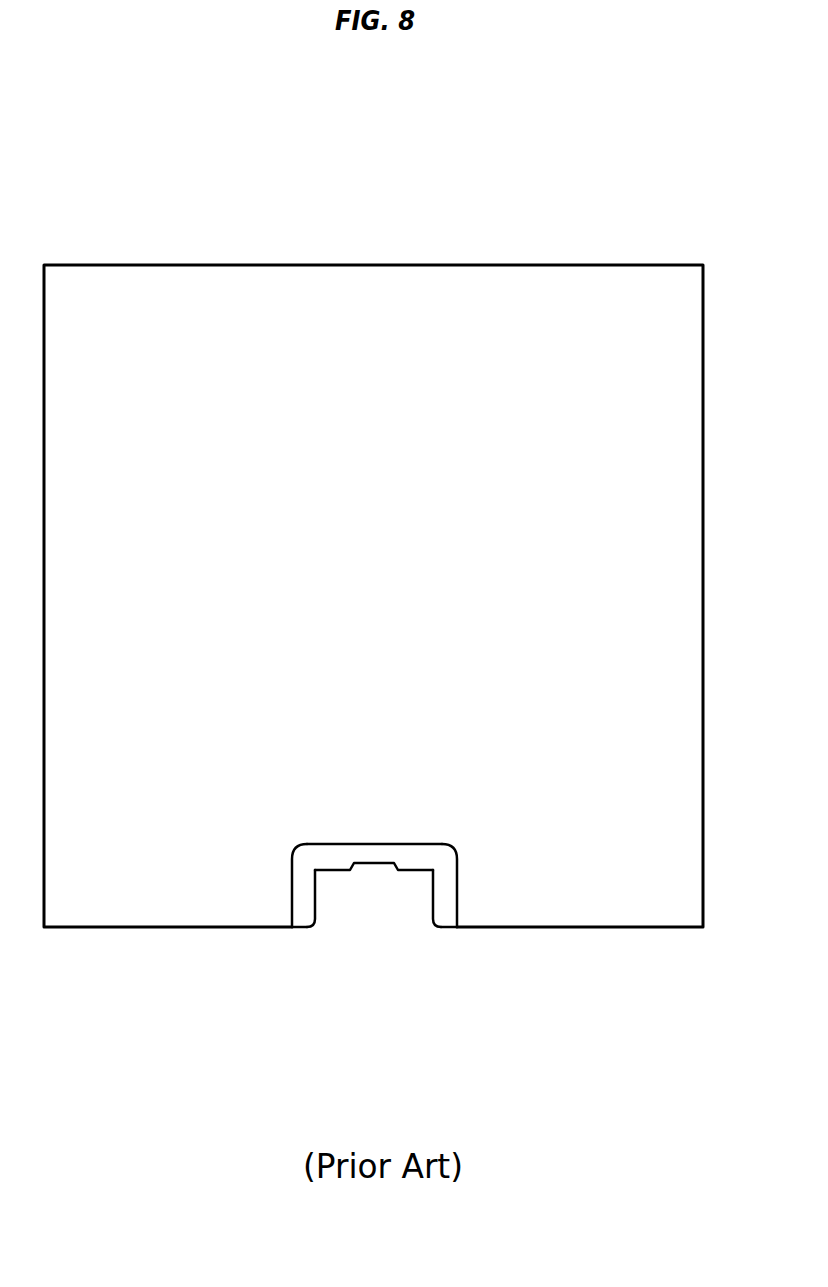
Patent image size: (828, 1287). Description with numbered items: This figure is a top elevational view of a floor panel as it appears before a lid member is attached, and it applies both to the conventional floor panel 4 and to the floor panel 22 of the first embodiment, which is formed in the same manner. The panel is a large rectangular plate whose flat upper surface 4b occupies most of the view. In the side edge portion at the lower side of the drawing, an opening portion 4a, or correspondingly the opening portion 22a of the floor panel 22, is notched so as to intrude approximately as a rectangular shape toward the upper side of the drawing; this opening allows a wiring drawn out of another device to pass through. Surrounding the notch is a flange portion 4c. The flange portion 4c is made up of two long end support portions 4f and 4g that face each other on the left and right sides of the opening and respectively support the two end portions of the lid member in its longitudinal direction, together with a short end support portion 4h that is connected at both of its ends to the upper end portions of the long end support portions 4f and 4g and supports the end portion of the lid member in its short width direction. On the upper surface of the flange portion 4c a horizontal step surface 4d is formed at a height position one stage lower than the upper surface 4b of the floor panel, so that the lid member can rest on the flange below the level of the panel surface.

The floor panel 4 is at (290, 210).
The floor panel 22 is at (373, 497).
The opening portion 4a is at (362, 903).
The opening portion 22a is at (347, 883).
The upper surface 4b is at (395, 555).
The flange portion 4c is at (431, 903).
The step surface 4d is at (445, 918).
The long end support portion 4f is at (302, 895).
The long end support portion 4g is at (446, 896).
The short end support portion 4h is at (369, 850).